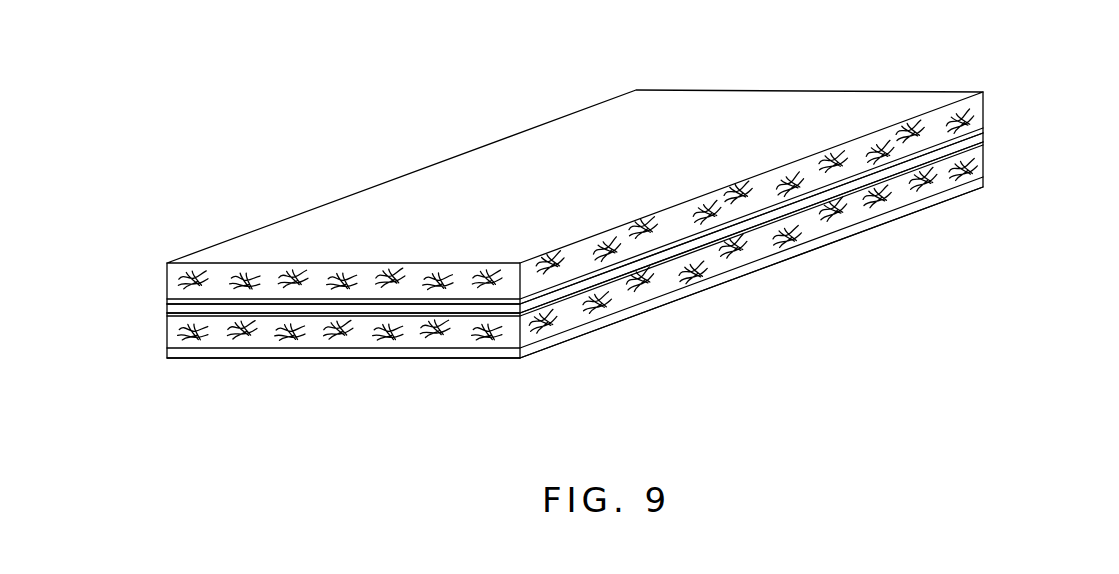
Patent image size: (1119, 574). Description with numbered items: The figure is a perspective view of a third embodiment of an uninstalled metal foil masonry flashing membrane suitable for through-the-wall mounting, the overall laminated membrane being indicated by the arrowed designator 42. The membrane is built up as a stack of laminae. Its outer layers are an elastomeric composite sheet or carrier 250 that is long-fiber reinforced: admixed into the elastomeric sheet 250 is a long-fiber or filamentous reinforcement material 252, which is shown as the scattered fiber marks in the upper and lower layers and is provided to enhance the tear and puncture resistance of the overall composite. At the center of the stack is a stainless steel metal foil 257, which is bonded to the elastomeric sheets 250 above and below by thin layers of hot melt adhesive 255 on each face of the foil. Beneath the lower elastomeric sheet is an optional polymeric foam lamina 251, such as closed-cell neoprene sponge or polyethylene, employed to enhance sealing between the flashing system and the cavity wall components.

The composite panel 42 is at (423, 155).
The elastomeric sheet 250 is at (805, 88).
The polymeric foam layer 251 is at (310, 353).
The filamentous reinforcement material 252 is at (557, 270).
The hot melt adhesive 255 is at (985, 128).
The metal foil 257 is at (985, 138).